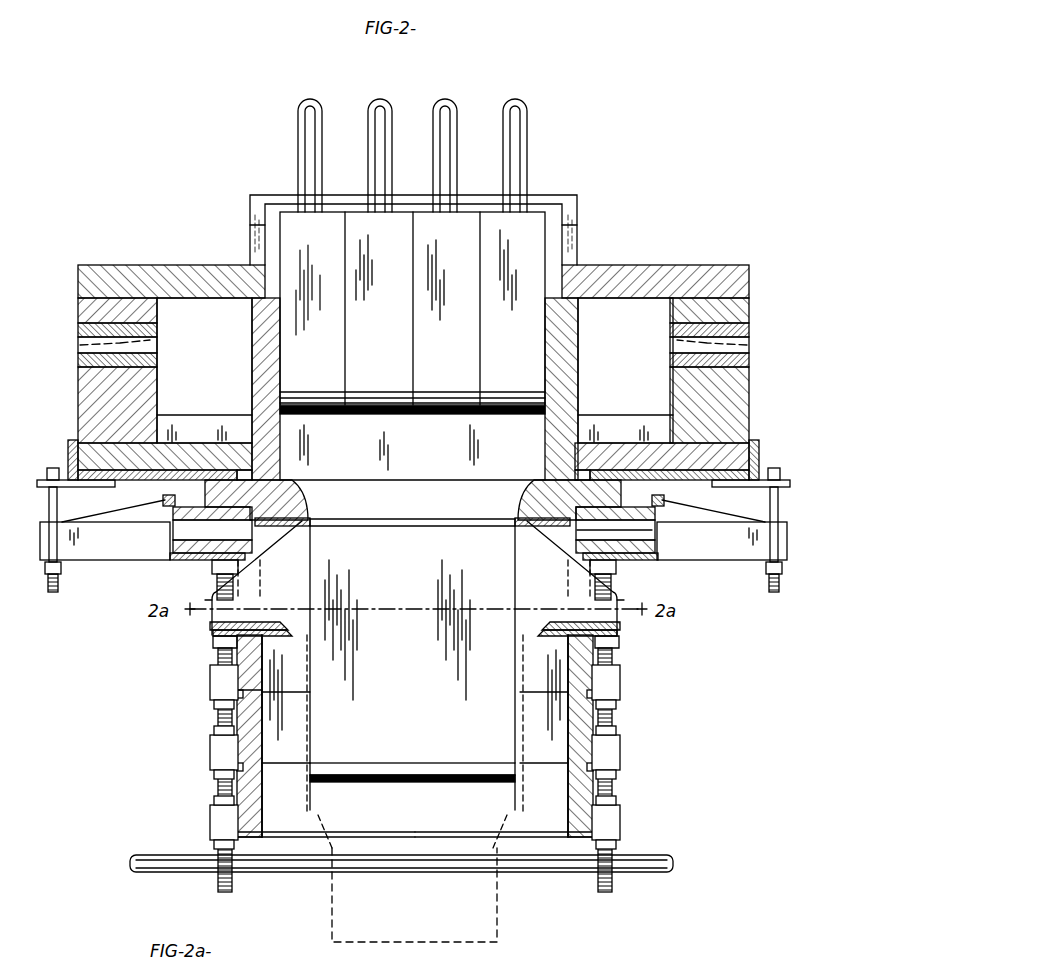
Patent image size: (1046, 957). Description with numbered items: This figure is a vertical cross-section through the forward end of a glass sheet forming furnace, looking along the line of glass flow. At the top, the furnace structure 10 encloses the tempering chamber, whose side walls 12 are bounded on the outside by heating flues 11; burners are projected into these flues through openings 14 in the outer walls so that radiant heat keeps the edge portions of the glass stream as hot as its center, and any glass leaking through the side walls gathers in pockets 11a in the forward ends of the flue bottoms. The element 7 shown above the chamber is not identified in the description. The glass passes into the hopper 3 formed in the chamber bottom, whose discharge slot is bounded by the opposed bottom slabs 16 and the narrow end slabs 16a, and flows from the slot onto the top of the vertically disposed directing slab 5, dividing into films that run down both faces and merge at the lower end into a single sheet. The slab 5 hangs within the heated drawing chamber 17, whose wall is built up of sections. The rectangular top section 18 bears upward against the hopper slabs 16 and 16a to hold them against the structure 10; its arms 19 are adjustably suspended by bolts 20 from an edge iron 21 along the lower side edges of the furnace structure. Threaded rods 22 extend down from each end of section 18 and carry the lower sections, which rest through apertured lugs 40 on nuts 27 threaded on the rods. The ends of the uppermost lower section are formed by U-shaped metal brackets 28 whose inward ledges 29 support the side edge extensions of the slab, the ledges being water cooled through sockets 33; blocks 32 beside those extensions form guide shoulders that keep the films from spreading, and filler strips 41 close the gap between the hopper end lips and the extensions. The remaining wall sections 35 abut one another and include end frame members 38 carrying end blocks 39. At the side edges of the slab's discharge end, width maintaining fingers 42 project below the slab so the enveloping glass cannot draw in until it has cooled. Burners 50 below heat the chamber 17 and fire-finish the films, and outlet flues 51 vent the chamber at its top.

The hopper 3 is at (412, 452).
The directing slab 5 is at (412, 710).
The casing 7 is at (412, 313).
The furnace structure 10 is at (749, 386).
The heating flues 11 is at (415, 370).
The pockets 11a is at (185, 436).
The side wall 12 is at (282, 376).
The openings 14 is at (90, 345).
The bottom slabs 16 is at (341, 496).
The end slabs 16a is at (290, 492).
The drawing chamber 17 is at (415, 736).
The top section 18 is at (642, 552).
The arms 19 is at (115, 553).
The bolts 20 is at (56, 505).
The edge iron 21 is at (48, 484).
The threaded rods 22 is at (212, 797).
The nuts 27 is at (212, 652).
The U-shaped metal brackets 28 is at (616, 606).
The ledge 29 is at (415, 645).
The blocks 32 is at (297, 577).
The socket 33 is at (213, 640).
The wall sections 35 is at (620, 742).
The end frame member 38 is at (232, 680).
The end blocks 39 is at (262, 680).
The apertured lugs 40 is at (212, 752).
The filler strips 41 is at (268, 530).
The width maintaining fingers 42 is at (314, 800).
The burners 50 is at (176, 873).
The outlet flues 51 is at (642, 534).